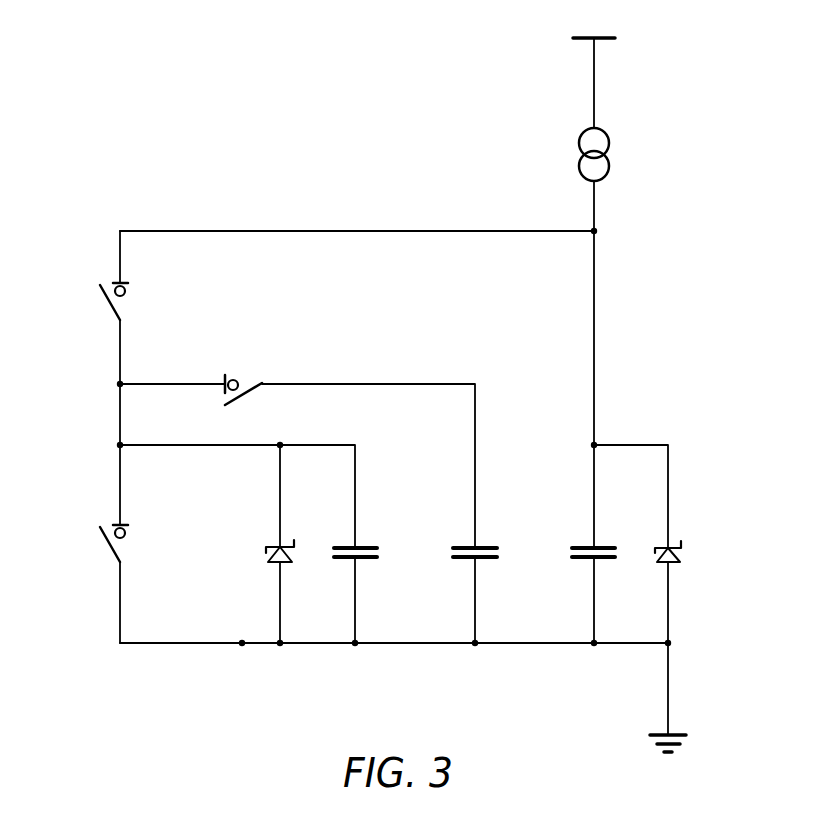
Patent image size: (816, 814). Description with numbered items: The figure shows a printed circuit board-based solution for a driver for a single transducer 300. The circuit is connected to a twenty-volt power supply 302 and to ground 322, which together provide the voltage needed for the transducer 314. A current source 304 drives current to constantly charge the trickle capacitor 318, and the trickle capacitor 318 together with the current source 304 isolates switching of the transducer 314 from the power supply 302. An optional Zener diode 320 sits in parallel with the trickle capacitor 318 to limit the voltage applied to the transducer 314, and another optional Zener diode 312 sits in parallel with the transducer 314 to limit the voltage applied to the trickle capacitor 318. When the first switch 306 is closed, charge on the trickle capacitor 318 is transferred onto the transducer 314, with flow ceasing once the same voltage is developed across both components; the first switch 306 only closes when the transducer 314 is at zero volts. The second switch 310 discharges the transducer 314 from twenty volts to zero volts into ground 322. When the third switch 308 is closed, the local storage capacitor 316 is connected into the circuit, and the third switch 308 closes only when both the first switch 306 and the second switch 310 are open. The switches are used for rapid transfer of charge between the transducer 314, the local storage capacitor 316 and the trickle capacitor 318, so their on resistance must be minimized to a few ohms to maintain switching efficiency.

The printed circuit board-based driver circuit 300 is at (208, 196).
The power supply 302 is at (612, 38).
The current source G1 304 is at (585, 158).
The switch S1 306 is at (112, 303).
The switch S3 308 is at (244, 394).
The switch S2 310 is at (110, 548).
The Zener diode 312 is at (266, 558).
The transducer C1 314 is at (365, 547).
The local storage capacitor C2 316 is at (485, 547).
The trickle capacitor C3 318 is at (603, 547).
The Zener diode 320 is at (683, 556).
The ground 322 is at (688, 735).